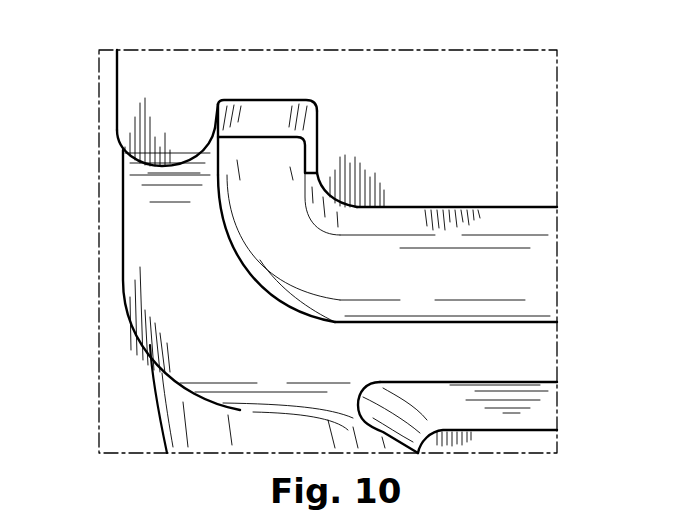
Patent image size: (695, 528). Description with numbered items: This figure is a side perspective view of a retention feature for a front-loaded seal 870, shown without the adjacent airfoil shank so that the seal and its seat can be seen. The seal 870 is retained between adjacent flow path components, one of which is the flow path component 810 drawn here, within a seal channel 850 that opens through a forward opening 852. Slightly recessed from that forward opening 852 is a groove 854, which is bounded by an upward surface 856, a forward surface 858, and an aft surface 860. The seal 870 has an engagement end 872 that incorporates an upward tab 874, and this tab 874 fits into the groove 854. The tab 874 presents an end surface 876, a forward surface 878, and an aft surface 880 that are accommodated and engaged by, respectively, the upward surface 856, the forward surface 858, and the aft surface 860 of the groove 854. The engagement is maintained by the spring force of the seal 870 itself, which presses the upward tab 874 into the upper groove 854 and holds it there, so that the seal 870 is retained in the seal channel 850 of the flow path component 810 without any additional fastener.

The flow path component 810 is at (123, 80).
The seal channel 850 is at (570, 207).
The forward opening 852 is at (140, 238).
The groove 854 is at (217, 107).
The upward surface 856 is at (262, 98).
The forward surface 858 is at (215, 128).
The aft surface 860 is at (317, 123).
The front-loaded seal 870 is at (513, 223).
The engagement end 872 is at (343, 325).
The tab 874 is at (267, 222).
The end surface 876 is at (262, 137).
The forward surface 878 is at (218, 170).
The aft surface 880 is at (317, 172).